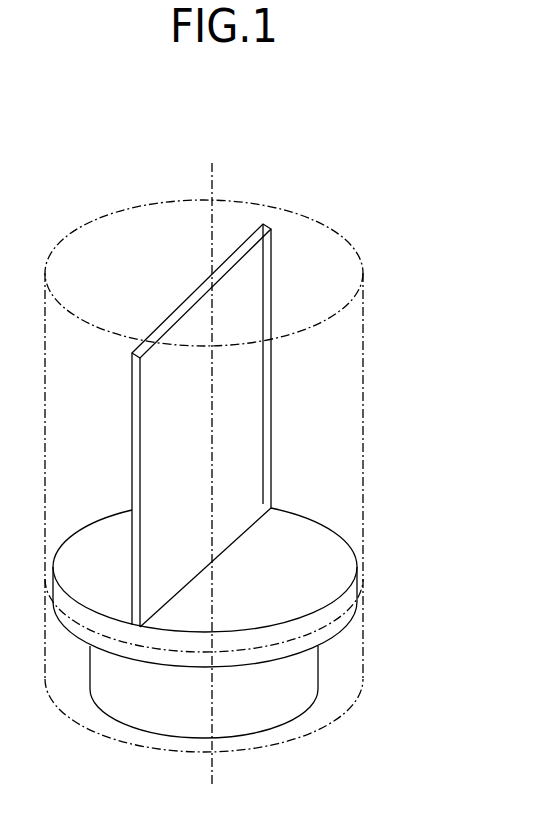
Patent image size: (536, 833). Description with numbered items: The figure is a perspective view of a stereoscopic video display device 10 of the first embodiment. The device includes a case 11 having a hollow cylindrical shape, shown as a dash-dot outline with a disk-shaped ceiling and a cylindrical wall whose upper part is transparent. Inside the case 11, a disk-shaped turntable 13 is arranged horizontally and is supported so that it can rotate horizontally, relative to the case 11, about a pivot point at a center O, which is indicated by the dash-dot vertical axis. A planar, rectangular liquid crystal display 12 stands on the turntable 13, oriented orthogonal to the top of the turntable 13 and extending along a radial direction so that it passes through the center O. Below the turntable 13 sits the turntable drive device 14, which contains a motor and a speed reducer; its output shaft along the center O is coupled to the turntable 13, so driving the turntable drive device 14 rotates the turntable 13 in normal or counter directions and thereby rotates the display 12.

The stereoscopic video display device 10 is at (392, 150).
The case 11 is at (372, 313).
The display 12 is at (189, 286).
The turntable 13 is at (326, 514).
The turntable drive device 14 is at (330, 665).
The center O is at (213, 181).